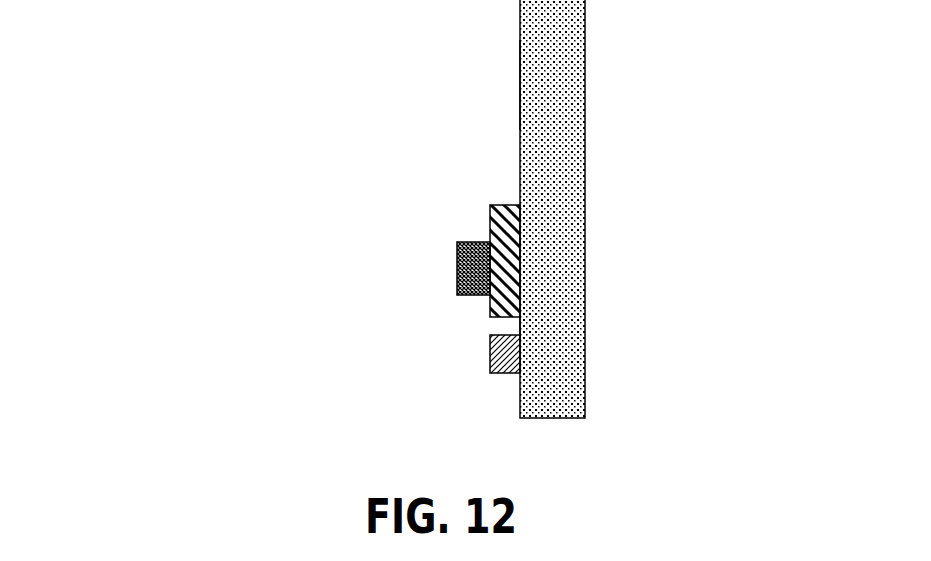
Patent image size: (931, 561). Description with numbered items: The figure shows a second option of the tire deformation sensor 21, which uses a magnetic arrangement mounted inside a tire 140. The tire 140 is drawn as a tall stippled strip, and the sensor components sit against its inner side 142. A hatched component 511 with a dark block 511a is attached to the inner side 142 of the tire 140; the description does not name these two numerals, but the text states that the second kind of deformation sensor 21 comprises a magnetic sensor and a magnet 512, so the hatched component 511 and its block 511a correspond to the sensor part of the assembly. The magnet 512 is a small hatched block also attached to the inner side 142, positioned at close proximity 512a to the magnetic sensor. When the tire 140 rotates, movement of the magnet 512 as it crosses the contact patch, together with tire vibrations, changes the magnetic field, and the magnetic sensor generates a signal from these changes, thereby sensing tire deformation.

The deformation sensor 21 is at (180, 38).
The tire 140 is at (682, 82).
The inner side 142 is at (517, 82).
The connector element 511 is at (438, 200).
The connector contact 511a is at (488, 300).
The magnet 512 is at (511, 382).
The close proximity 512a is at (536, 338).